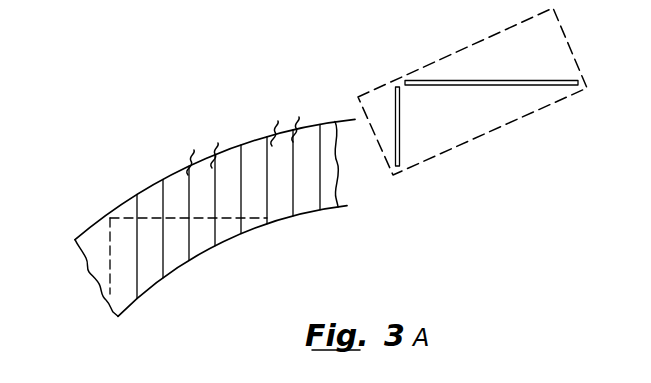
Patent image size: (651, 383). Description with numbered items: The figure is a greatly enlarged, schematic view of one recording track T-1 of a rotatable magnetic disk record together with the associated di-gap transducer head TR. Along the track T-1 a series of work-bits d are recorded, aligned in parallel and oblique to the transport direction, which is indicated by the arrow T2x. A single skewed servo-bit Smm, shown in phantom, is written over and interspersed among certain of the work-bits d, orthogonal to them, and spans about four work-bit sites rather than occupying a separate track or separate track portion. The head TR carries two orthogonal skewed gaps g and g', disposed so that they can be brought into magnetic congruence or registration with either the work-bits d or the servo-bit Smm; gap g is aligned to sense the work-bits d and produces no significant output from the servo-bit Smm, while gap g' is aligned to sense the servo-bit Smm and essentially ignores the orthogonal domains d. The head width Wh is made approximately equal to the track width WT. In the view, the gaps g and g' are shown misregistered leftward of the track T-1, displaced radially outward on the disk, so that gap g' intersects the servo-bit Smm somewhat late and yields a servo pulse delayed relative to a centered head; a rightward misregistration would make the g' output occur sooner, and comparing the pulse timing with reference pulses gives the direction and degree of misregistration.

The recording track T-1 is at (89, 268).
The skewed servo-bit Smm is at (126, 217).
The transport direction arrow T2x is at (100, 297).
The work-bit d is at (243, 137).
The track width WT is at (360, 117).
The di-gap head TR is at (515, 142).
The transducer gap g is at (413, 126).
The transducer gap g' is at (491, 65).
The head width Wh is at (584, 1).